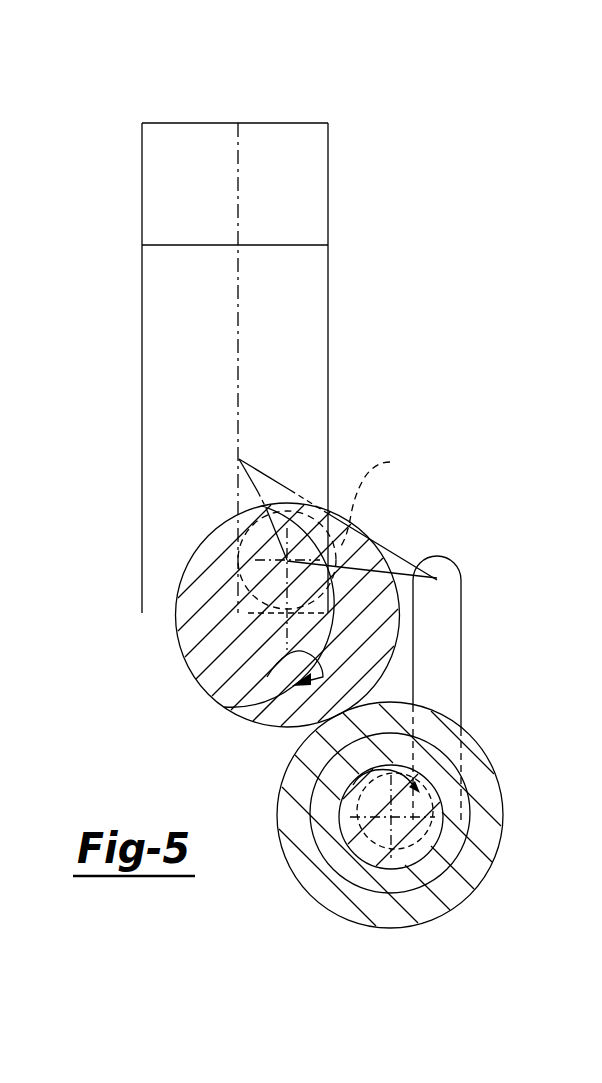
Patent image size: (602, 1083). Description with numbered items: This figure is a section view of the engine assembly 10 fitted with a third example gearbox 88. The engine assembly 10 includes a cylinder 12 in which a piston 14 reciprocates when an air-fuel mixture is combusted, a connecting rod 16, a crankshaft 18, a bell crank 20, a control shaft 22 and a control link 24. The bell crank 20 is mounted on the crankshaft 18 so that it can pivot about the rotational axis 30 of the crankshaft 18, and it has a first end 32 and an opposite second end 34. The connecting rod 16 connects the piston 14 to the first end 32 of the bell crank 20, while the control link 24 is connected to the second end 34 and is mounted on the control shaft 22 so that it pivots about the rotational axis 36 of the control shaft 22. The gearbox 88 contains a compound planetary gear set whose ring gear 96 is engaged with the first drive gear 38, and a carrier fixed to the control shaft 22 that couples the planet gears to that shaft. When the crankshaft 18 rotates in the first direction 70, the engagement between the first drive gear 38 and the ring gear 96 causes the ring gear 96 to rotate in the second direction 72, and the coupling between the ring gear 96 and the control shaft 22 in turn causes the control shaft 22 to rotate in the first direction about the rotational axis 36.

The engine assembly 10 is at (173, 101).
The cylinder 12 is at (328, 291).
The piston 14 is at (283, 247).
The connecting rod 16 is at (243, 362).
The crankshaft 18 is at (377, 493).
The bell crank 20 is at (270, 477).
The control shaft 22 is at (390, 868).
The control link 24 is at (462, 650).
The rotational axis 30 is at (287, 562).
The first end 32 is at (257, 462).
The second end 34 is at (439, 556).
The rotational axis 36 is at (400, 865).
The first drive gear 38 is at (176, 633).
The first direction 70 is at (231, 717).
The second direction 72 is at (311, 798).
The gearbox 88 is at (503, 472).
The ring gear 96 is at (500, 795).